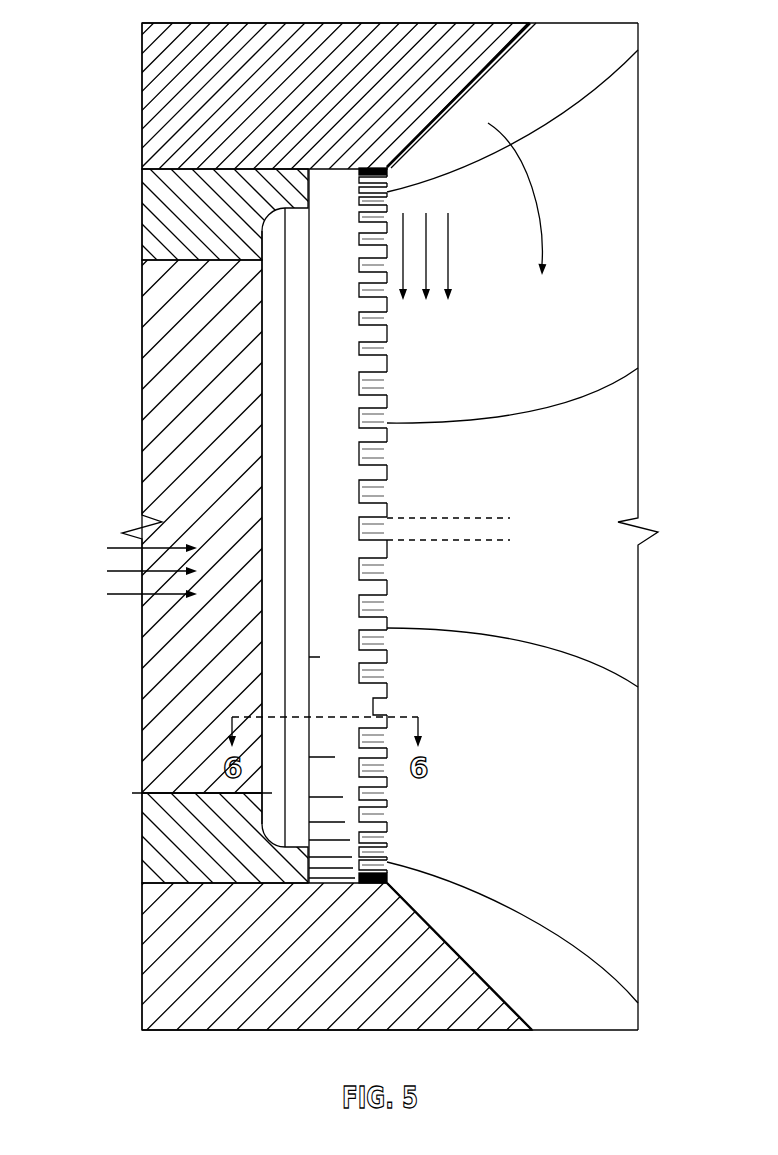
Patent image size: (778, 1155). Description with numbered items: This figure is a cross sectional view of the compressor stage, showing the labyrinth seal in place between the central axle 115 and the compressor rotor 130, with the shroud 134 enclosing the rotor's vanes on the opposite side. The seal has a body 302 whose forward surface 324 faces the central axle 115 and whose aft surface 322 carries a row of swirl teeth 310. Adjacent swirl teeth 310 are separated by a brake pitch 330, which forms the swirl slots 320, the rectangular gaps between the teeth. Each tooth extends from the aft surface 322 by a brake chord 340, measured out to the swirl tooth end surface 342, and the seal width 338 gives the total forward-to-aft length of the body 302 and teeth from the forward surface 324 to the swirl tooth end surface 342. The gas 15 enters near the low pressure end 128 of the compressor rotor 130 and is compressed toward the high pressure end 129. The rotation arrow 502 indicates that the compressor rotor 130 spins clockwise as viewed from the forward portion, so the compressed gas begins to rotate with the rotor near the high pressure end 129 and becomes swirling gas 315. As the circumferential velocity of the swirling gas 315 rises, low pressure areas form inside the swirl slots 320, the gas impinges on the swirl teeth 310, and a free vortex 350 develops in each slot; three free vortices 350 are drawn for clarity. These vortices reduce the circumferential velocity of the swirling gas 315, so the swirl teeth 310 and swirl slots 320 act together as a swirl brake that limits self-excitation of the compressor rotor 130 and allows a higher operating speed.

The gas 15 is at (122, 596).
The central axle 115 is at (142, 392).
The low pressure end 128 is at (233, 673).
The high pressure end 129 is at (460, 705).
The compressor rotor 130 is at (610, 160).
The shroud 134 is at (547, 412).
The body 302 is at (322, 357).
The swirl teeth 310 is at (388, 170).
The swirling gas 315 is at (448, 258).
The swirl slot 320 is at (372, 457).
The aft surface 322 is at (364, 566).
The forward surface 324 is at (308, 465).
The brake pitch 330 is at (505, 488).
The seal width 338 is at (387, 167).
The brake chord 340 is at (330, 922).
The swirl tooth end surface 342 is at (394, 657).
The free vortex 350 is at (386, 352).
The rotation arrow 502 is at (540, 222).